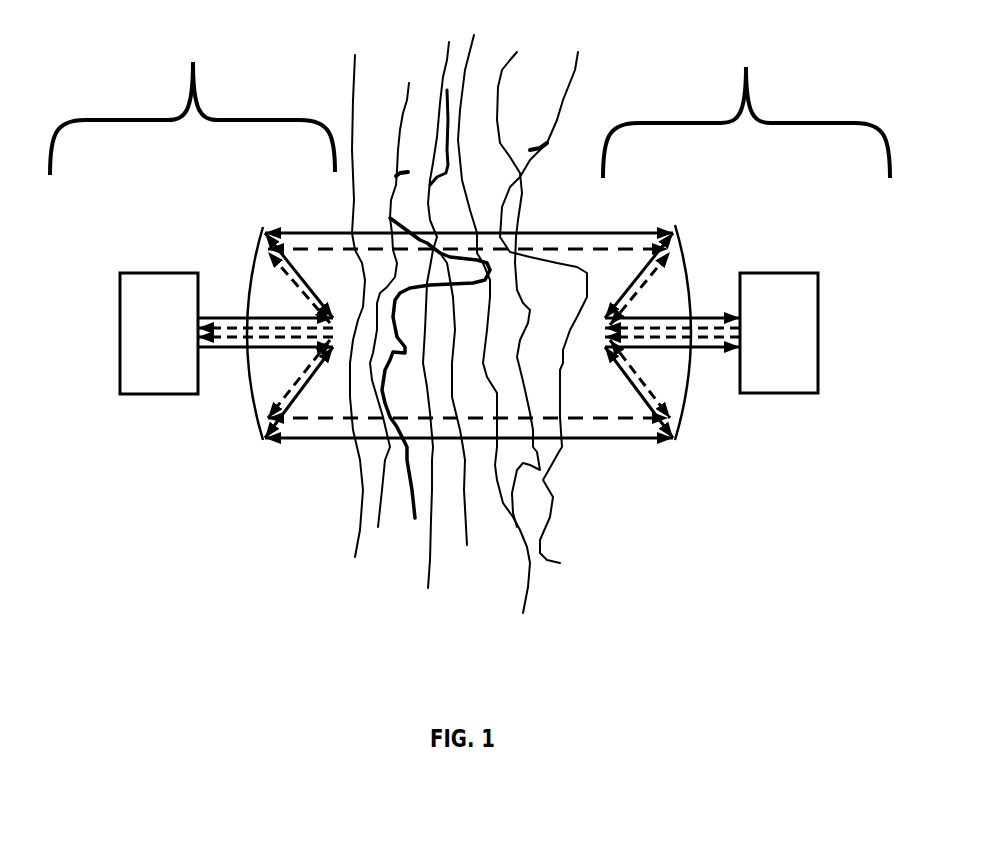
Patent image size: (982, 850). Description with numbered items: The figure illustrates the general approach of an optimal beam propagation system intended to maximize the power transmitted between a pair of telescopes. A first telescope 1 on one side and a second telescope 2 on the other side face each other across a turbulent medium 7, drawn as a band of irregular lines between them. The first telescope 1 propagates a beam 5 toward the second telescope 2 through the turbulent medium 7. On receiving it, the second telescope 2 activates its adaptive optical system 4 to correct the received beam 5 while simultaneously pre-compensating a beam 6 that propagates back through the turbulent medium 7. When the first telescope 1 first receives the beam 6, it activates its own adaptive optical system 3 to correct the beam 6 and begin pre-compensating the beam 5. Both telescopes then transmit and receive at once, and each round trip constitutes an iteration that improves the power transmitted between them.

The first telescope 1 is at (192, 96).
The second telescope 2 is at (746, 96).
The adaptive optical system 3 is at (145, 293).
The adaptive optical system 4 is at (793, 310).
The beam 5 is at (330, 440).
The beam 6 is at (612, 424).
The turbulent medium 7 is at (468, 336).